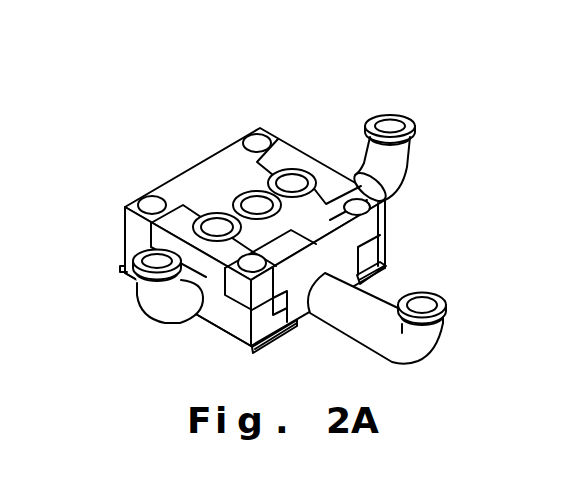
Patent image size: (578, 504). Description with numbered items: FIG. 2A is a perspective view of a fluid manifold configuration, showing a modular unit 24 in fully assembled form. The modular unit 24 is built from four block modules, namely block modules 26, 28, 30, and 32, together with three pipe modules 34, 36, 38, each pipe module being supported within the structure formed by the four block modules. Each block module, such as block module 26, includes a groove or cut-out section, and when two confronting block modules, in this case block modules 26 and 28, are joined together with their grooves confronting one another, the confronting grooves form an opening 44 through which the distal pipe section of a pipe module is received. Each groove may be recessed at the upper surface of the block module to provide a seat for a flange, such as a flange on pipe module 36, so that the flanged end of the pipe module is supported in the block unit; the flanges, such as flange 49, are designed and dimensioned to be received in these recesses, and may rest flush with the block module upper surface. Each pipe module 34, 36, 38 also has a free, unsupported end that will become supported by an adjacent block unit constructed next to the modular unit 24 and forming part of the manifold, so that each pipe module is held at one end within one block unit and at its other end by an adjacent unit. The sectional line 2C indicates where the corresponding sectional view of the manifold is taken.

The modular unit 24 is at (267, 73).
The block module 26 is at (211, 155).
The block module 28 is at (384, 248).
The block module 30 is at (162, 175).
The block module 32 is at (232, 340).
The pipe module 34 is at (438, 357).
The pipe module 36 is at (412, 182).
The pipe module 38 is at (147, 320).
The opening 44 is at (294, 168).
The flange 49 is at (383, 112).
The sectional line 2C is at (115, 298).